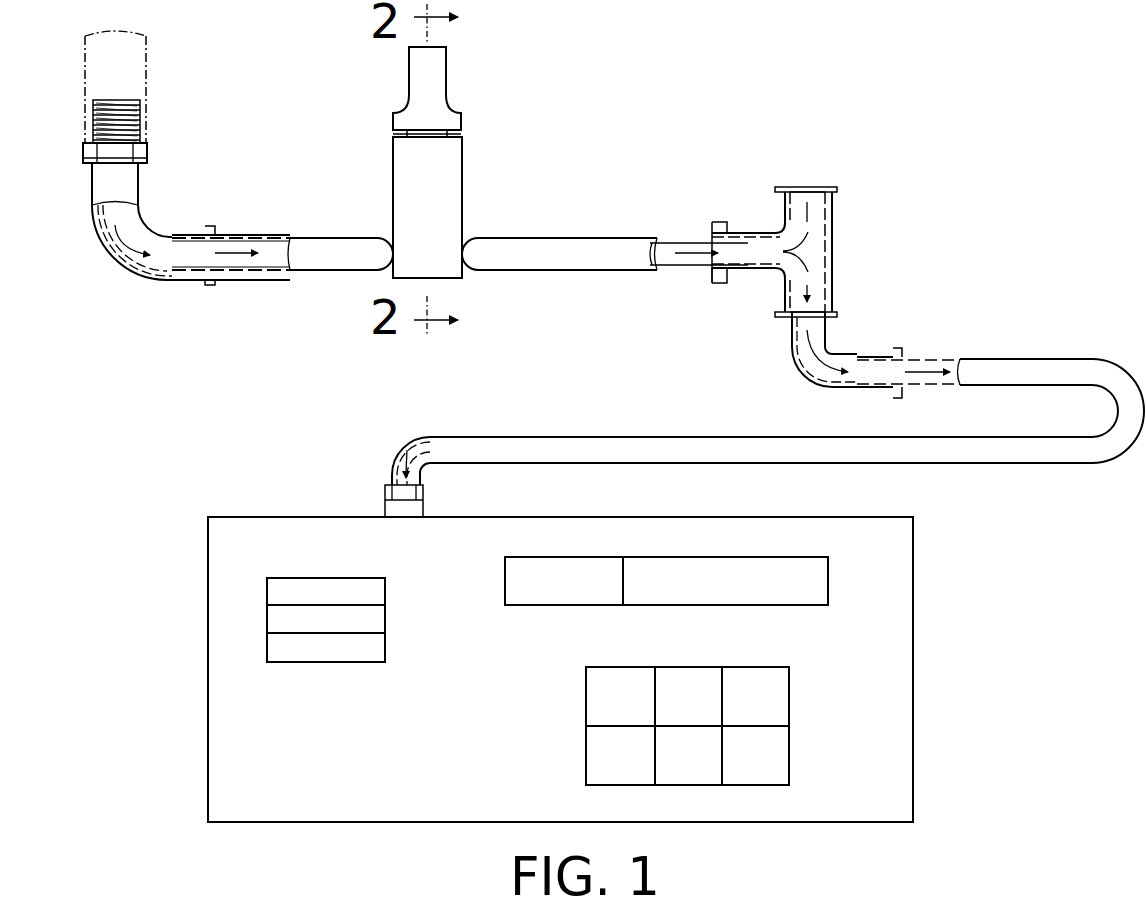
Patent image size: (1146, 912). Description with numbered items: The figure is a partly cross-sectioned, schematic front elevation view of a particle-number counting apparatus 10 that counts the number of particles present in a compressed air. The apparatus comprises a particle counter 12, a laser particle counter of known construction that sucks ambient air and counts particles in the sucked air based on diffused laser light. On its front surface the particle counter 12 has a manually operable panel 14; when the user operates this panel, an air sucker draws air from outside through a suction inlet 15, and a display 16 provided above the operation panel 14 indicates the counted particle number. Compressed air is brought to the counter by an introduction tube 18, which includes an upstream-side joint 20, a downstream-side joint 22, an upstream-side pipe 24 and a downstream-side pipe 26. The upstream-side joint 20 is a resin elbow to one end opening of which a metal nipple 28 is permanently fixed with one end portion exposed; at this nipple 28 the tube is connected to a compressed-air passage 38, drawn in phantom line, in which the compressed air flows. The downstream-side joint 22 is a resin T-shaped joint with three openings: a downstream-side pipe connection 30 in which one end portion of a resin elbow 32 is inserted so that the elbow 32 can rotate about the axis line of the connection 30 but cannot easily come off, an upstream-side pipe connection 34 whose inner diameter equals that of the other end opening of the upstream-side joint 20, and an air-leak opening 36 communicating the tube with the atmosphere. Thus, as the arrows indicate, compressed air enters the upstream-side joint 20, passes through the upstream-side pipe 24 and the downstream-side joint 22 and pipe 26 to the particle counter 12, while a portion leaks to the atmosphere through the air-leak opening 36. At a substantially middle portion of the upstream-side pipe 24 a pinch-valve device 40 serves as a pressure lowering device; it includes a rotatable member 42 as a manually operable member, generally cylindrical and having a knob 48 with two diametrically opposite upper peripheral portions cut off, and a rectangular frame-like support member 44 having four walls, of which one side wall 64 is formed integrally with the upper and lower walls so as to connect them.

The particle-number counting apparatus 10 is at (867, 90).
The particle counter 12 is at (922, 653).
The manually operable panel 14 is at (773, 749).
The suction inlet 15 is at (385, 497).
The display 16 is at (816, 577).
The introduction tube 18 is at (582, 223).
The upstream-side joint 20 is at (104, 258).
The downstream-side joint 22 is at (833, 240).
The upstream-side pipe 24 is at (331, 250).
The downstream-side pipe 26 is at (1010, 453).
The nipple 28 is at (83, 153).
The downstream-side pipe connection 30 is at (830, 294).
The elbow 32 is at (802, 376).
The upstream-side pipe connection 34 is at (712, 270).
The air-leak opening 36 is at (814, 190).
The compressed-air passage 38 is at (140, 72).
The pinch-valve device 40 is at (458, 60).
The rotatable member 42 is at (455, 83).
The support member 44 is at (467, 187).
The knob 48 is at (424, 80).
The one side wall 64 is at (403, 172).